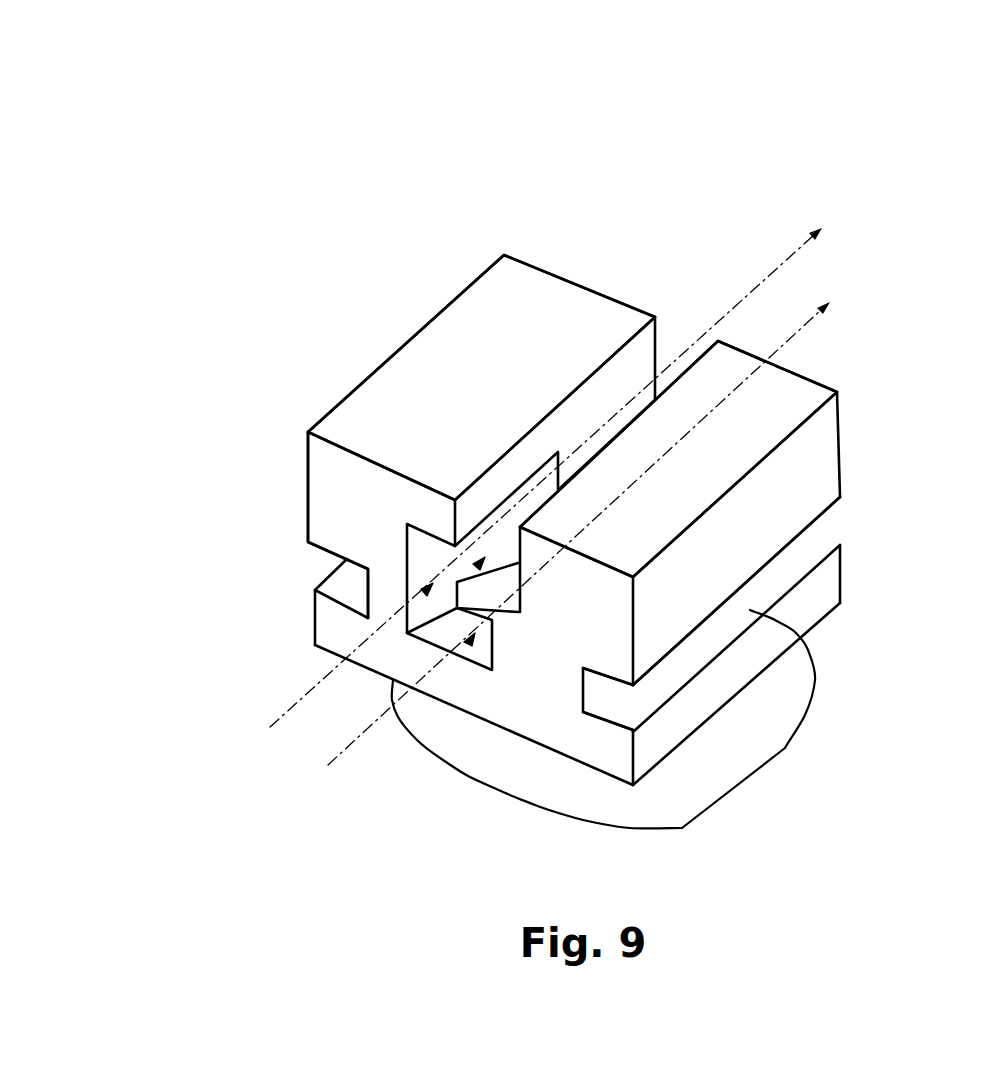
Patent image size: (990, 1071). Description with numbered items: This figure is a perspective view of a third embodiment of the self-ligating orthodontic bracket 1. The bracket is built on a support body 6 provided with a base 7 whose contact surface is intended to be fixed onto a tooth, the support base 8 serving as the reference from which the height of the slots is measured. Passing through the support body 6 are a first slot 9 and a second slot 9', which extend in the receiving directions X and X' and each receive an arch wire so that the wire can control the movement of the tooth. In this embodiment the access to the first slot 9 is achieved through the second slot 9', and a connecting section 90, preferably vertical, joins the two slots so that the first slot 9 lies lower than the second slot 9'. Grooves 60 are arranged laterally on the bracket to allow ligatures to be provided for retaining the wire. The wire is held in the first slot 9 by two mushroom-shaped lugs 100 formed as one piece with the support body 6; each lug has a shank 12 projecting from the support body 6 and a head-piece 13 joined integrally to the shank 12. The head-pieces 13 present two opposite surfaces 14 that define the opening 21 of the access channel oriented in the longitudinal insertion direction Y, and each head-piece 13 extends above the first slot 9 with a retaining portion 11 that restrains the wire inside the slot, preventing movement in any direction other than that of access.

The self-ligating orthodontic bracket 1 is at (623, 470).
The support body 6 is at (233, 448).
The base 7 is at (755, 717).
The support base 8 is at (608, 830).
The first slot 9 is at (403, 746).
The second slot 9' is at (353, 715).
The connecting section 90 is at (425, 591).
The retaining portion 11 is at (492, 610).
The shank 12 is at (388, 592).
The head-piece 13 is at (325, 503).
The opposite surface 14 is at (678, 355).
The opening 21 is at (560, 428).
The groove 60 is at (825, 530).
The lug 100 is at (420, 367).